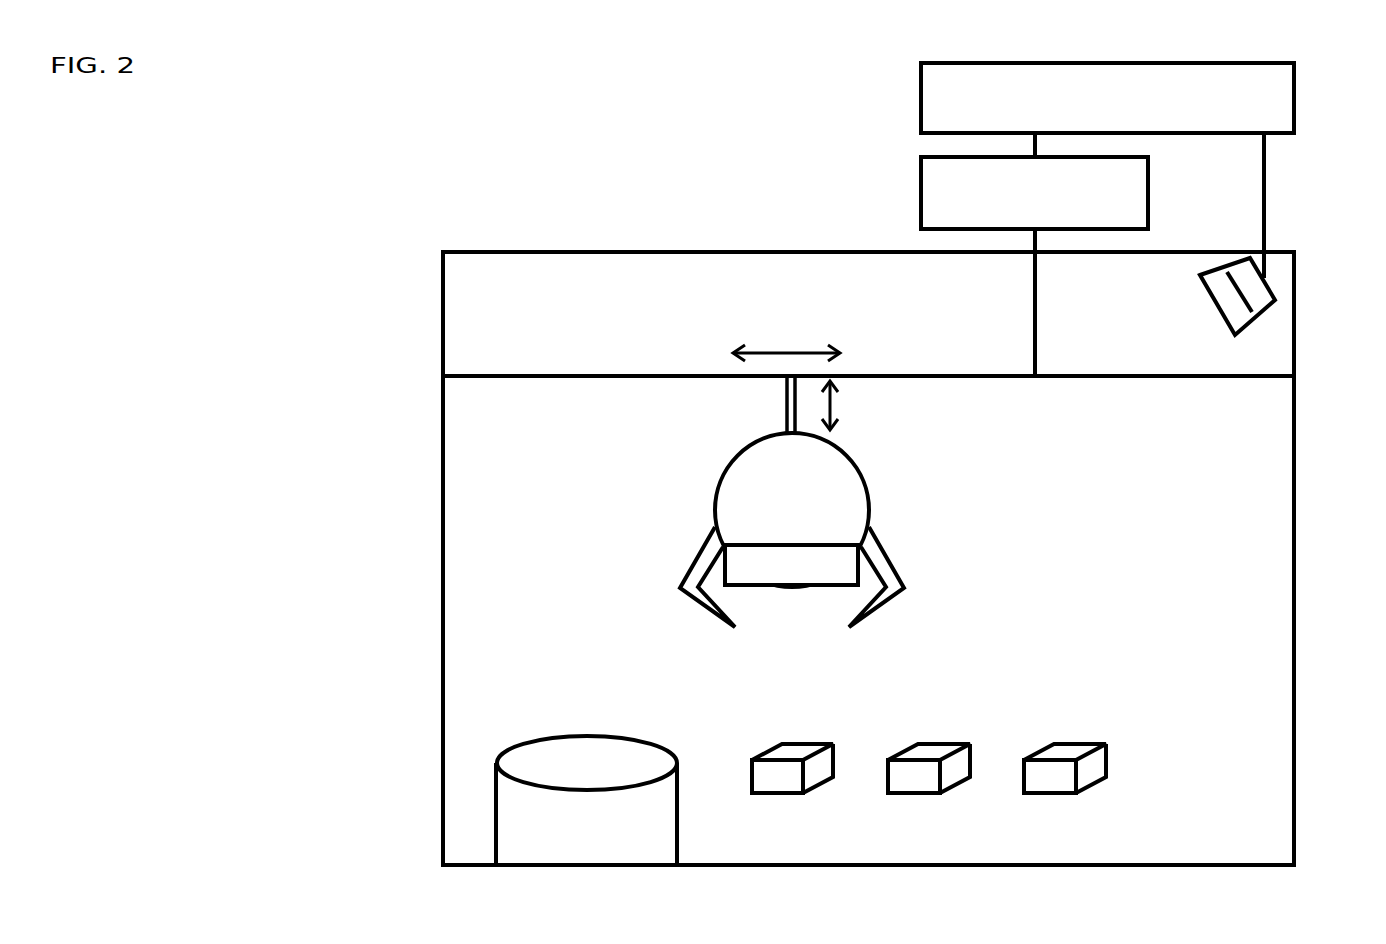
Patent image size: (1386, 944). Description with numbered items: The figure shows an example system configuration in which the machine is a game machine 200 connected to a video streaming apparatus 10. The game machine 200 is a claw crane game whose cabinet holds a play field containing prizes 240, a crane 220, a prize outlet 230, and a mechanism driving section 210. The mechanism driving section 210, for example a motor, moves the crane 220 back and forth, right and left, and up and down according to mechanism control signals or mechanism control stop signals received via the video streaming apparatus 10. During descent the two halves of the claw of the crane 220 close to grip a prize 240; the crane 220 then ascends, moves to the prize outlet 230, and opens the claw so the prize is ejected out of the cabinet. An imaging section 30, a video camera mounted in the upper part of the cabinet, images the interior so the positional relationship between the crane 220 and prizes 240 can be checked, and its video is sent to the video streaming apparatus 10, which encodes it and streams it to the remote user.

The video streaming apparatus 10 is at (1294, 102).
The imaging section 30 is at (1275, 290).
The game machine 200 is at (1294, 562).
The mechanism driving section 210 is at (1148, 198).
The crane 220 is at (866, 490).
The prize outlet 230 is at (653, 762).
The prizes 240 is at (1106, 760).